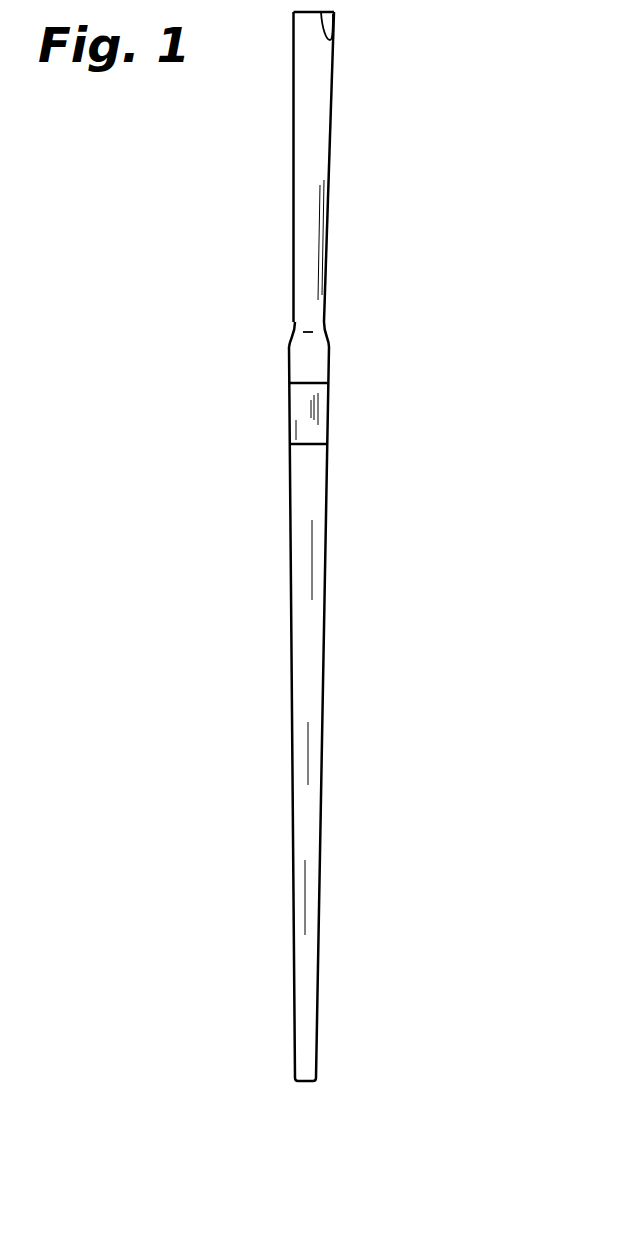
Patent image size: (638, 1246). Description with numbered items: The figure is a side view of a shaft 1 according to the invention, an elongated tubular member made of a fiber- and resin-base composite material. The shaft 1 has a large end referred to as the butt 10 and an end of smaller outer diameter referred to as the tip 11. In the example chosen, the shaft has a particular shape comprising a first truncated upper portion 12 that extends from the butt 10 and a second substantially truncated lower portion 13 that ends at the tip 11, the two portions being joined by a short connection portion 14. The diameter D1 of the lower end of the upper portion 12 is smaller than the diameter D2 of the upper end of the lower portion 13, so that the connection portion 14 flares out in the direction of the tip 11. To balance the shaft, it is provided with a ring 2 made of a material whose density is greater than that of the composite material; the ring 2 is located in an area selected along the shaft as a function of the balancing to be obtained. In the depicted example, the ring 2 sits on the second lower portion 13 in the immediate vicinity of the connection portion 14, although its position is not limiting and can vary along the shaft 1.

The shaft 1 is at (258, 580).
The ring 2 is at (298, 423).
The butt 10 is at (331, 42).
The tip 11 is at (307, 1082).
The first truncated upper portion 12 is at (292, 183).
The second substantially truncated lower portion 13 is at (293, 840).
The connection portion 14 is at (295, 337).
The diameter of the lower end of the upper portion D1 is at (295, 322).
The diameter of the upper end of the lower portion D2 is at (358, 349).